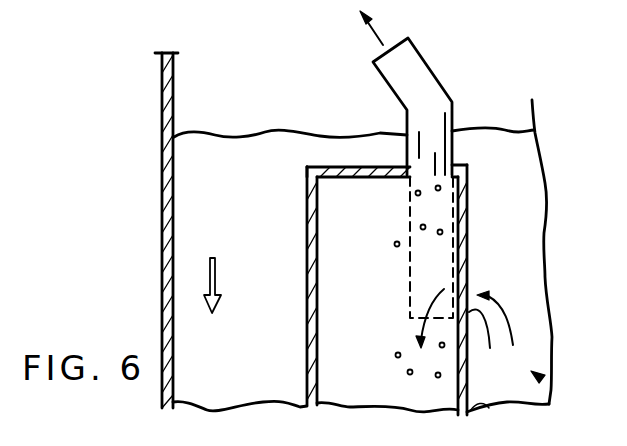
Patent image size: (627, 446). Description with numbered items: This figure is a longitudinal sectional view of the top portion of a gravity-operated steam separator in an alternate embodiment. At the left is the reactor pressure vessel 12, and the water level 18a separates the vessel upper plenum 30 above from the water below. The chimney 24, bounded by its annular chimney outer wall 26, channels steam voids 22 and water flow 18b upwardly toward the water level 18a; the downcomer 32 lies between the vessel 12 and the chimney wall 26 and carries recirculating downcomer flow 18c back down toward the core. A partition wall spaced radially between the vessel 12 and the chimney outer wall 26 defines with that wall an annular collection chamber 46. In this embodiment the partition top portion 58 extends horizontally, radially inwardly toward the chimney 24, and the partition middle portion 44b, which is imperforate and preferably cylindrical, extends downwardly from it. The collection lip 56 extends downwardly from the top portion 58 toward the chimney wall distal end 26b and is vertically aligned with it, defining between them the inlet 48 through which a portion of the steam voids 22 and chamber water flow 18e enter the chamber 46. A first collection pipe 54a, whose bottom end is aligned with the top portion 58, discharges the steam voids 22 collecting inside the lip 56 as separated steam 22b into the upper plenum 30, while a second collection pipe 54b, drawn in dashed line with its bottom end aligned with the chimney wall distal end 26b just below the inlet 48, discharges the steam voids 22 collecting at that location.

The reactor pressure vessel 12 is at (162, 118).
The vessel upper plenum 30 is at (292, 81).
The water level 18a is at (230, 133).
The partition top portion 58 is at (343, 167).
The separated steam 22b is at (378, 32).
The first collection pipes 54a is at (440, 84).
The collection lip 56 is at (467, 213).
The inlet 48 is at (467, 264).
The steam voids 22 is at (394, 246).
The downcomer flow 18c is at (218, 278).
The second collection pipes 54b is at (410, 278).
The chamber water flow 18e is at (415, 328).
The water flow 18b is at (508, 314).
The partition middle portion 44b is at (307, 318).
The chimney wall distal end 26b is at (496, 342).
The downcomer 32 is at (248, 393).
The collection chamber 46 is at (377, 391).
The chimney 24 is at (540, 378).
The chimney outer wall 26 is at (490, 409).